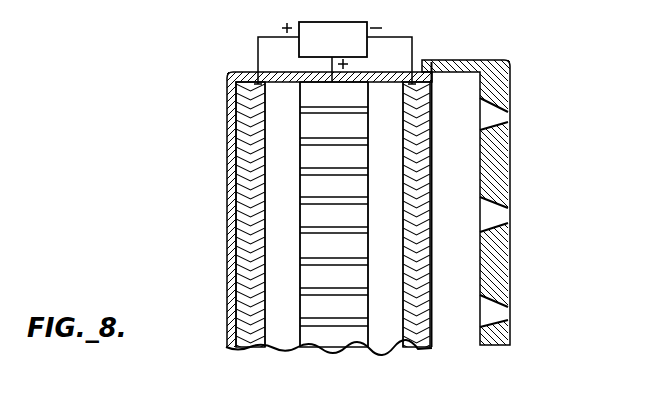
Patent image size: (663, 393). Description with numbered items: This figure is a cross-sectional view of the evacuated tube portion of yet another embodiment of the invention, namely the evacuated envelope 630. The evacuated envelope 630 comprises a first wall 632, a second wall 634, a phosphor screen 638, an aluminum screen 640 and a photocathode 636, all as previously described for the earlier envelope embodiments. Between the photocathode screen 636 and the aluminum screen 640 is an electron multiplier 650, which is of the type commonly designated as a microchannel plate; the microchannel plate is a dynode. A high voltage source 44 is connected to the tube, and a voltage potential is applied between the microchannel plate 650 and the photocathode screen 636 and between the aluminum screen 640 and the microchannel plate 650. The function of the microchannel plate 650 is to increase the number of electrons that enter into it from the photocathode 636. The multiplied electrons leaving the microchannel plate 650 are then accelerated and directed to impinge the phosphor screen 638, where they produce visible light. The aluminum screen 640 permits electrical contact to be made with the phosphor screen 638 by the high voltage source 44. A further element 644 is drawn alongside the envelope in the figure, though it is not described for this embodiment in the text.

The high voltage source 44 is at (352, 22).
The evacuated envelope 630 is at (206, 204).
The first wall 632 is at (428, 347).
The second wall 634 is at (233, 309).
The photocathode 636 is at (396, 350).
The phosphor screen 638 is at (249, 342).
The aluminum screen 640 is at (262, 350).
The outer bracket / housing 644 is at (508, 320).
The electron multiplier 650 is at (338, 356).